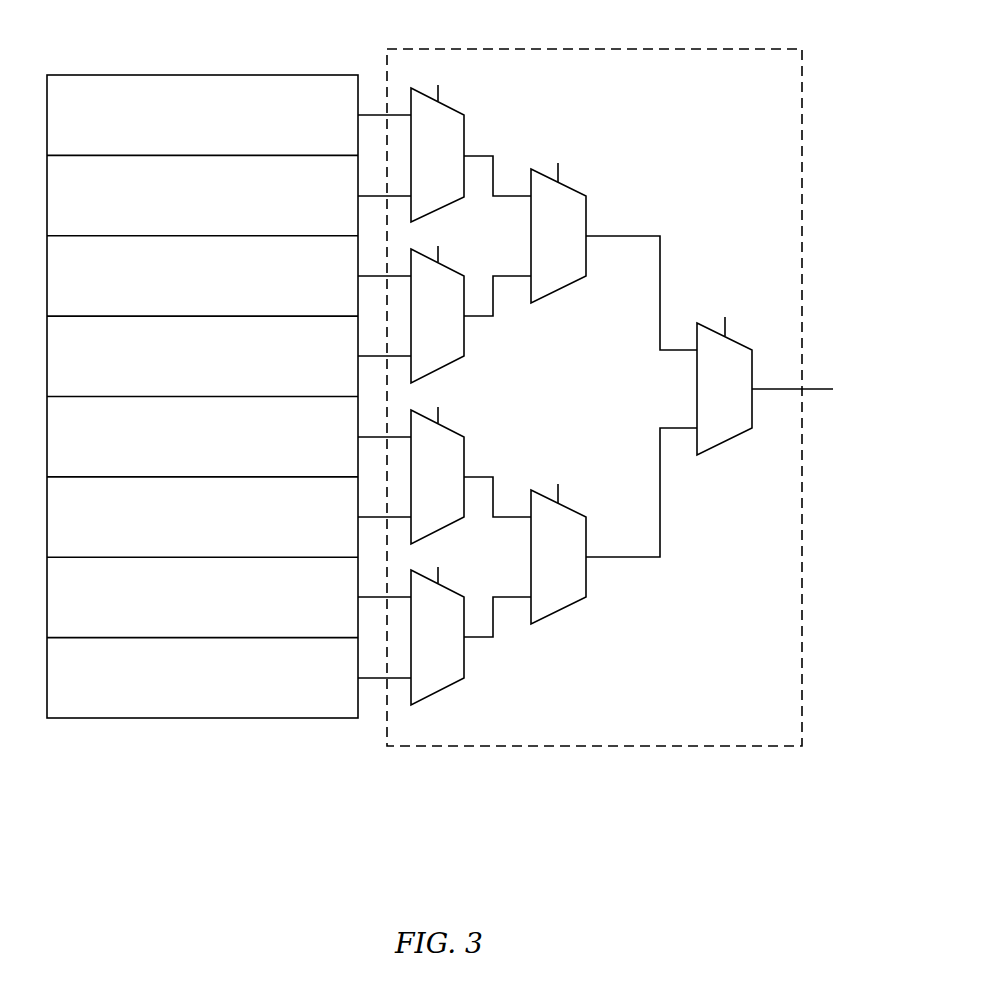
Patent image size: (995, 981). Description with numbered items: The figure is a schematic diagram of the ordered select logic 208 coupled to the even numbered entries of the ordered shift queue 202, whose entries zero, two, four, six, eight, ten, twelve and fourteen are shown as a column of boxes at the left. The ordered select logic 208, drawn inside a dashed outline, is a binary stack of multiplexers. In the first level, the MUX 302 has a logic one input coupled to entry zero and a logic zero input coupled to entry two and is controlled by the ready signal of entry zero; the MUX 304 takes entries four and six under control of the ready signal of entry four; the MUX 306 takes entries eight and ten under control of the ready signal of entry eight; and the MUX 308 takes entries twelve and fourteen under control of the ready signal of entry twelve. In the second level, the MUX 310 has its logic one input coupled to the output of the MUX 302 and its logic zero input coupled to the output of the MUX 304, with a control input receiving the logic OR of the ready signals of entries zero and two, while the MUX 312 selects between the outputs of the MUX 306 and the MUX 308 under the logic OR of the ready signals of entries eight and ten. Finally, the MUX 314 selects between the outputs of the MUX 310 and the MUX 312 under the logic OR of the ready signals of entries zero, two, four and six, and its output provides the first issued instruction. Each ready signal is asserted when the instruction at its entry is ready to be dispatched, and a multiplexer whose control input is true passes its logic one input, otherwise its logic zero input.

The ordered shift queue 202 is at (208, 746).
The ordered select logic 208 is at (602, 48).
The MUX 302 is at (423, 167).
The MUX 304 is at (423, 327).
The MUX 306 is at (423, 488).
The MUX 308 is at (423, 648).
The MUX 310 is at (543, 247).
The MUX 312 is at (543, 568).
The MUX 314 is at (709, 400).